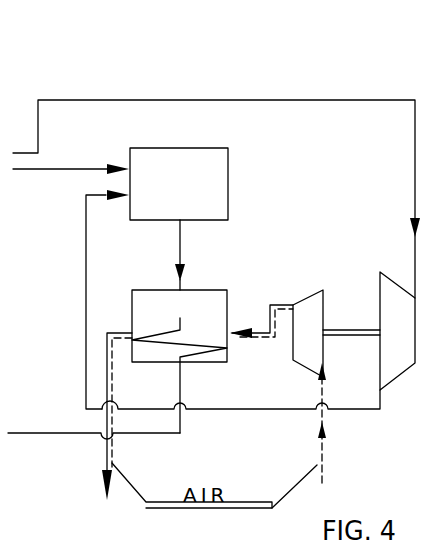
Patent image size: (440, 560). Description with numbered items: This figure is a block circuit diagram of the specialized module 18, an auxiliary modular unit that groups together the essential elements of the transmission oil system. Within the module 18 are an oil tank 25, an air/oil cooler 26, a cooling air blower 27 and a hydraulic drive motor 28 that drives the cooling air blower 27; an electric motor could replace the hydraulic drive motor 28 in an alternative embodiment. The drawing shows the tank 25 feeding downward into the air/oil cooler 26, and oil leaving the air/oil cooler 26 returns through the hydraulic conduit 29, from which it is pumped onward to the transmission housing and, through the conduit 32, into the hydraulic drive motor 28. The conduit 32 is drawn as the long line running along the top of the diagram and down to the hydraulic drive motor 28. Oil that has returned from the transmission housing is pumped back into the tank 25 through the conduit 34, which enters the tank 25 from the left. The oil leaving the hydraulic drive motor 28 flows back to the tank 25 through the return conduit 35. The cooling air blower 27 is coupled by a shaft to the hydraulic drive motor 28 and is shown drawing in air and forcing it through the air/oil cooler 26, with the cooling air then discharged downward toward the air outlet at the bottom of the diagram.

The specialized module 18 is at (224, 63).
The oil tank 25 is at (190, 147).
The air/oil cooler 26 is at (217, 290).
The cooling air blower 27 is at (307, 335).
The hydraulic drive motor 28 is at (398, 335).
The hydraulic conduit 29 is at (42, 434).
The conduit 32 is at (78, 99).
The conduit 34 is at (48, 172).
The return conduit 35 is at (86, 308).